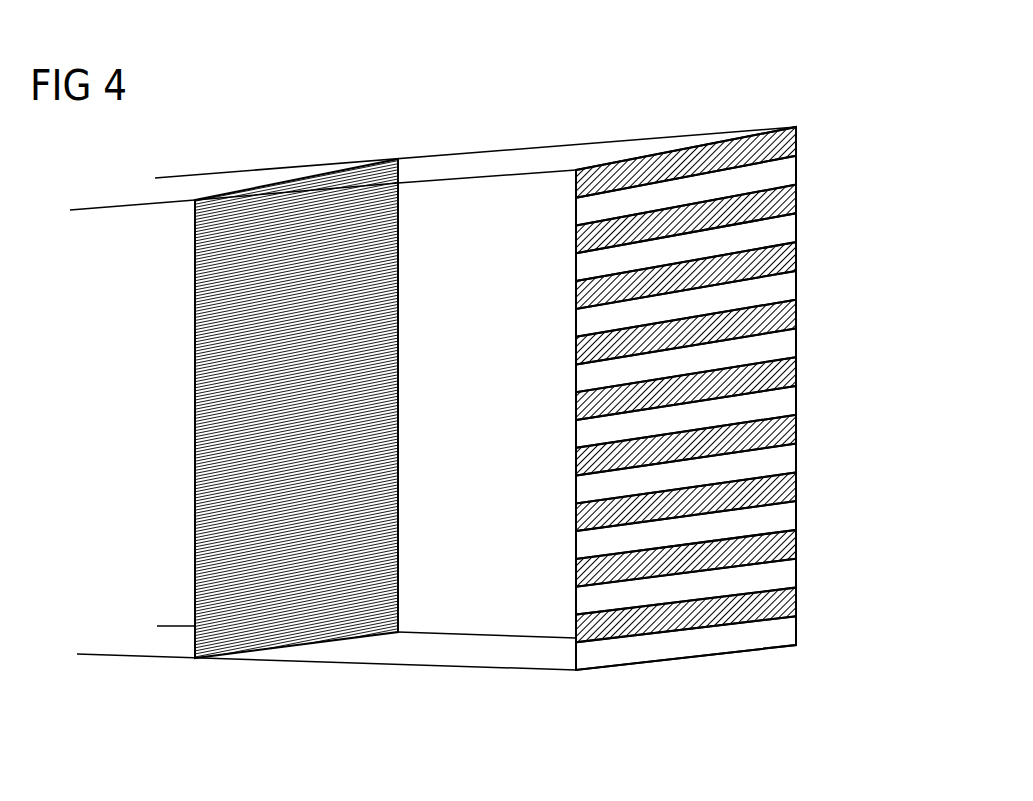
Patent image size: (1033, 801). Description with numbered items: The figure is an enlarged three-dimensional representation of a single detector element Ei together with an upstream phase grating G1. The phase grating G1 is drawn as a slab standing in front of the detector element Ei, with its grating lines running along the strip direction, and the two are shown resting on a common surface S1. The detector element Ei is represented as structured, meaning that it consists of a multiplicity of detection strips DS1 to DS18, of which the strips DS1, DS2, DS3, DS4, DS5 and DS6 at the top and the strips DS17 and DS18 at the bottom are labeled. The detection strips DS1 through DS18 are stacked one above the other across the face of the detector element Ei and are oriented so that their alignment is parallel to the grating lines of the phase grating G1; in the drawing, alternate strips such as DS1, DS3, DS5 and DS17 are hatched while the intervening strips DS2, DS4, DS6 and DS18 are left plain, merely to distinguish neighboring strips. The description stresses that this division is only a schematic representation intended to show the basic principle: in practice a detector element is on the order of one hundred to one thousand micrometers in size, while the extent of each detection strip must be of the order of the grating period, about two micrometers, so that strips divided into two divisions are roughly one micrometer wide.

The phase grating G1 is at (295, 178).
The substrate surface S1 is at (505, 160).
The multilayer element Ei is at (708, 115).
The detection strip DS1 is at (797, 138).
The detection strip DS2 is at (575, 208).
The detection strip DS3 is at (797, 195).
The detection strip DS4 is at (575, 265).
The detection strip DS5 is at (797, 253).
The detection strip DS6 is at (575, 320).
The detection strip DS17 is at (797, 606).
The detection strip DS18 is at (573, 658).